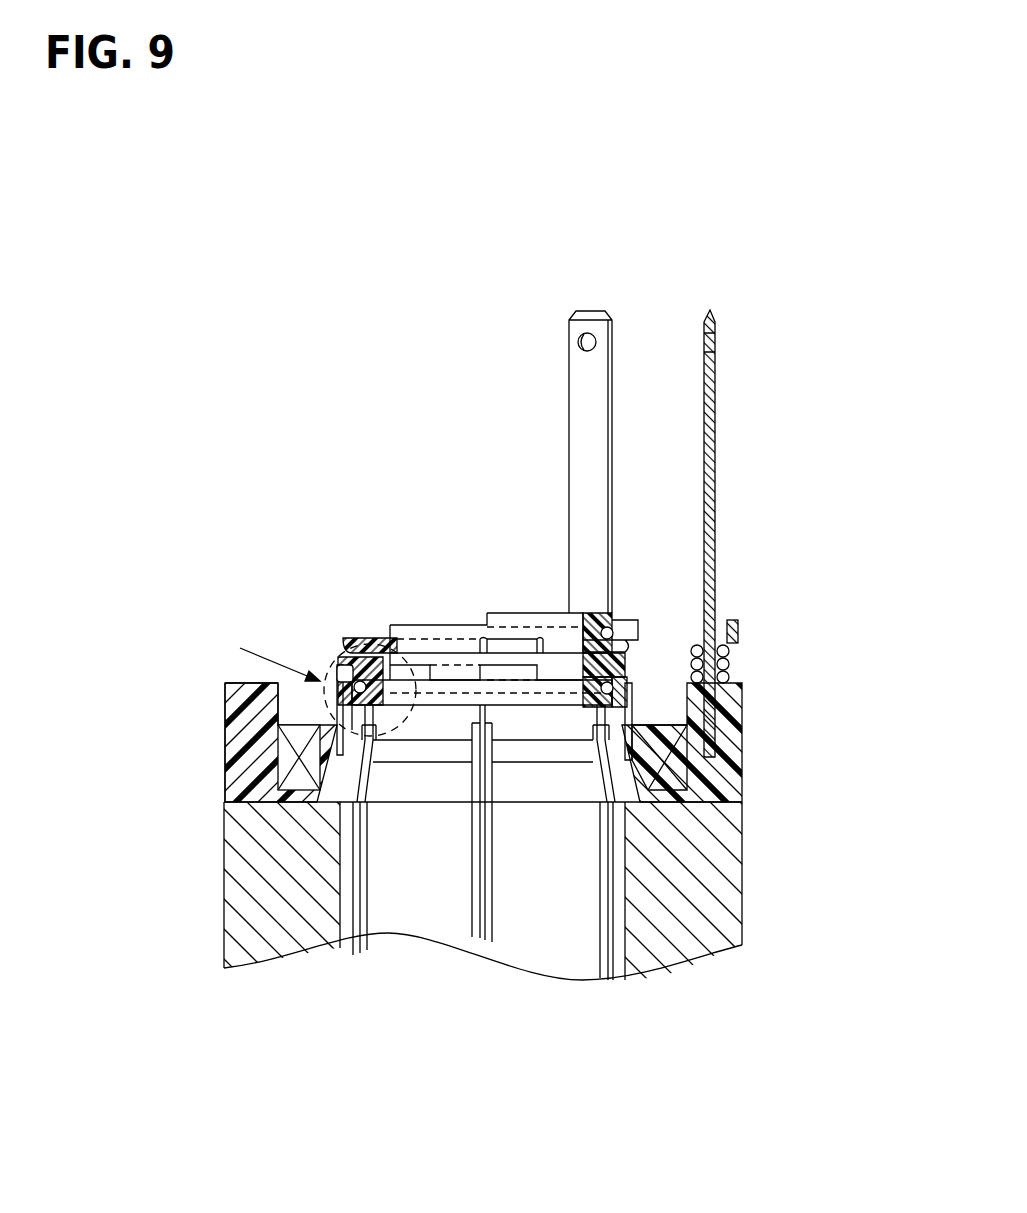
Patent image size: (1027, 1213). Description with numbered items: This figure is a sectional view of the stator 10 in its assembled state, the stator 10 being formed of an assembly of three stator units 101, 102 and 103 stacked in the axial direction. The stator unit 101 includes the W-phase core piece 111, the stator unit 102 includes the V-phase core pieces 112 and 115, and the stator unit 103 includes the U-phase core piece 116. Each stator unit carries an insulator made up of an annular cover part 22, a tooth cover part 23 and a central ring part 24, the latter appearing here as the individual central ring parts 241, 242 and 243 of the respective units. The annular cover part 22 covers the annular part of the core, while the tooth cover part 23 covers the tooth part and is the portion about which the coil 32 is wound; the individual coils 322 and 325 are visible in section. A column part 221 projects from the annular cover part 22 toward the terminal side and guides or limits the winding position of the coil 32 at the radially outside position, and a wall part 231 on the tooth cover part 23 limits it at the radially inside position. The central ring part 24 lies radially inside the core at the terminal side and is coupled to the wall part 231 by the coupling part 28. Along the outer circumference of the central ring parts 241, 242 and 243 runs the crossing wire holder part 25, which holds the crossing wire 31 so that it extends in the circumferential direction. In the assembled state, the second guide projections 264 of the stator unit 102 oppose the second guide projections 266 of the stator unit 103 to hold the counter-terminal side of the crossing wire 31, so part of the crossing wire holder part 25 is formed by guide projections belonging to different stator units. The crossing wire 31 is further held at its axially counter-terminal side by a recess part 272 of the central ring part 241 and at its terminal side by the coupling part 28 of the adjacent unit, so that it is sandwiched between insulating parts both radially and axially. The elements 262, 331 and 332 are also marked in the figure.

The stator 10 is at (735, 271).
The annular cover part 22 is at (487, 751).
The column part 221 is at (243, 700).
The wall part 231 is at (333, 712).
The tooth cover part 23 is at (305, 795).
The central ring part 24 is at (477, 583).
The central ring part 241 is at (455, 688).
The central ring part 242 is at (430, 657).
The central ring part 243 is at (392, 648).
The crossing wire holder part 25 is at (680, 554).
The spring member 262 is at (527, 678).
The second guide projection 264 is at (518, 648).
The second guide projection 266 is at (603, 615).
The recess part 272 is at (347, 812).
The coupling part 28 is at (355, 648).
The crossing wire 31 is at (345, 690).
The coil 32 is at (487, 761).
The coil 322 is at (680, 765).
The coil 325 is at (290, 757).
The guide rod 331 is at (578, 383).
The guide pin 332 is at (718, 383).
The stator unit 101 is at (546, 929).
The stator unit 102 is at (476, 890).
The stator unit 103 is at (412, 920).
The W-phase core piece 111 is at (545, 945).
The V-phase core piece 112 is at (725, 887).
The V-phase core piece 115 is at (243, 935).
The U-phase core piece 116 is at (415, 910).